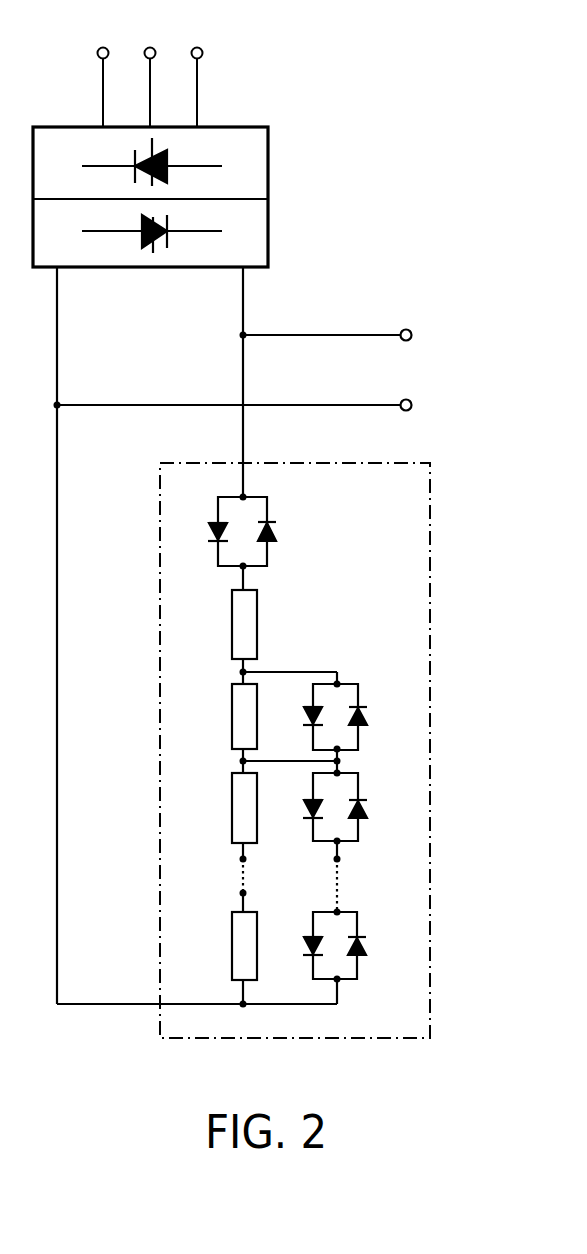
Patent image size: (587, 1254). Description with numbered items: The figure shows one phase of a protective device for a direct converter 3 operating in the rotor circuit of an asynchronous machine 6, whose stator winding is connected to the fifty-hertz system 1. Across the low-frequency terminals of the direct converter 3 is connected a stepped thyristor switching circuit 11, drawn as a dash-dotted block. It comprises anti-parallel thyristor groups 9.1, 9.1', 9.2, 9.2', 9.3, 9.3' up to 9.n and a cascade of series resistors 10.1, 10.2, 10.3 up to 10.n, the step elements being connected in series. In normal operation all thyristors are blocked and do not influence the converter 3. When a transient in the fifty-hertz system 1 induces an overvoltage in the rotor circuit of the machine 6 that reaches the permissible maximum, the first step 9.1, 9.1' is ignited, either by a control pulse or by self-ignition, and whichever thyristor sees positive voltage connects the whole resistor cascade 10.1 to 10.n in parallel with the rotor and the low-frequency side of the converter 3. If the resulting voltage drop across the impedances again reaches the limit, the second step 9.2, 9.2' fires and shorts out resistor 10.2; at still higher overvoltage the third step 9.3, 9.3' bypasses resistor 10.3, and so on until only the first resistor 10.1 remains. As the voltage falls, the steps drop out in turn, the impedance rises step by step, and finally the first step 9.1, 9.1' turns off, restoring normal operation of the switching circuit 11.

The three-phase 50 Hz supply terminals 1 is at (99, 48).
The direct converter 3 is at (268, 147).
The asynchronous machine 6 is at (412, 342).
The stepped thyristor switching circuit 11 is at (430, 530).
The thyristor 9.1 is at (208, 526).
The thyristor 9.1' is at (281, 526).
The thyristor 9.2 is at (301, 714).
The thyristor 9.2' is at (376, 714).
The thyristor 9.3 is at (301, 806).
The thyristor 9.3' is at (376, 806).
The thyristor 9.n is at (306, 945).
The first resistor 10.1 is at (232, 622).
The second resistor 10.2 is at (232, 718).
The third resistor 10.3 is at (232, 820).
The last resistor 10.n is at (232, 947).